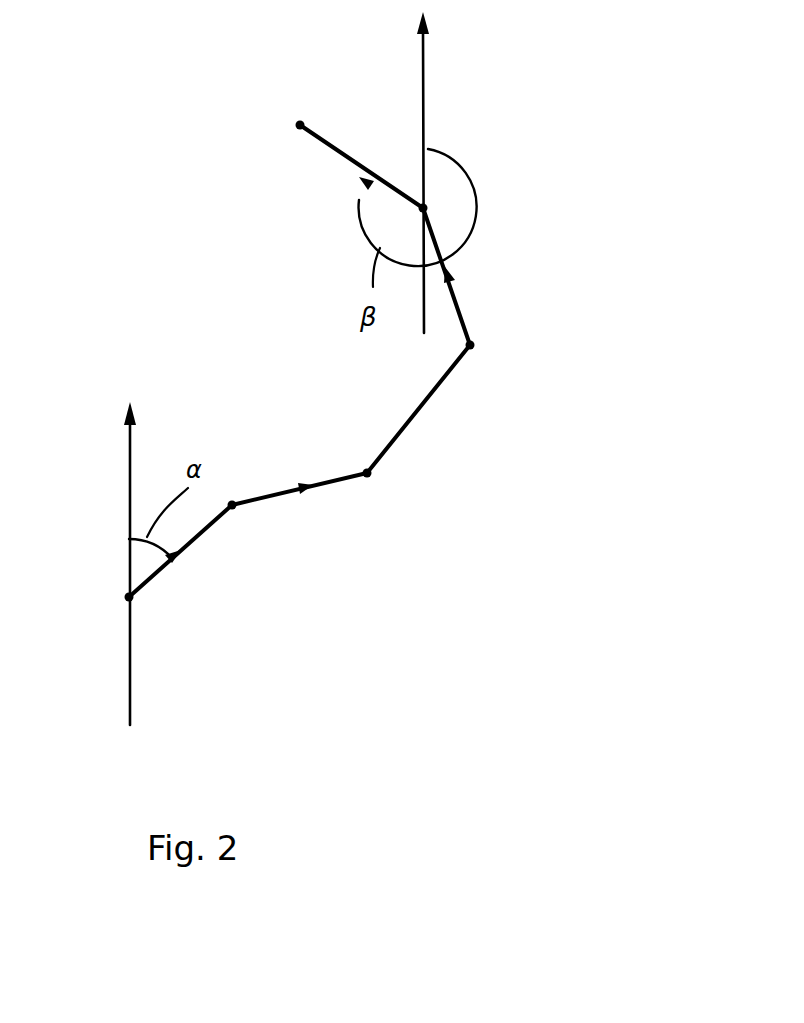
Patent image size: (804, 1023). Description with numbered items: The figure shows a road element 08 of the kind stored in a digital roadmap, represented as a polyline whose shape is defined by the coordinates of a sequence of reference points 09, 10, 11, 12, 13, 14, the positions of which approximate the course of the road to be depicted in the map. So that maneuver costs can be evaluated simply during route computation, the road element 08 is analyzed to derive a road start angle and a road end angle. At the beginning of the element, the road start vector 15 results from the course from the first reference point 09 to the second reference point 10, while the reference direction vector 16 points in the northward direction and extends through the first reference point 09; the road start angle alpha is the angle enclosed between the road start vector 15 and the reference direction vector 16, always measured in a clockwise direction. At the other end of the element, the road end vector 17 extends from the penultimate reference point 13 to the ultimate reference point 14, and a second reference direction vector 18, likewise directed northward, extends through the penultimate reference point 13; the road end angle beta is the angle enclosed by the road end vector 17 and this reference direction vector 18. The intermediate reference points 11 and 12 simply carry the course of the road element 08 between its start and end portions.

The road element 08 is at (362, 354).
The first reference point 09 is at (129, 597).
The second reference point 10 is at (232, 505).
The reference point 11 is at (367, 473).
The reference point 12 is at (470, 345).
The penultimate reference point 13 is at (430, 203).
The ultimate reference point 14 is at (300, 125).
The road start vector 15 is at (197, 540).
The reference direction vector 16 is at (130, 477).
The road end vector 17 is at (333, 143).
The reference direction vector 18 is at (427, 92).